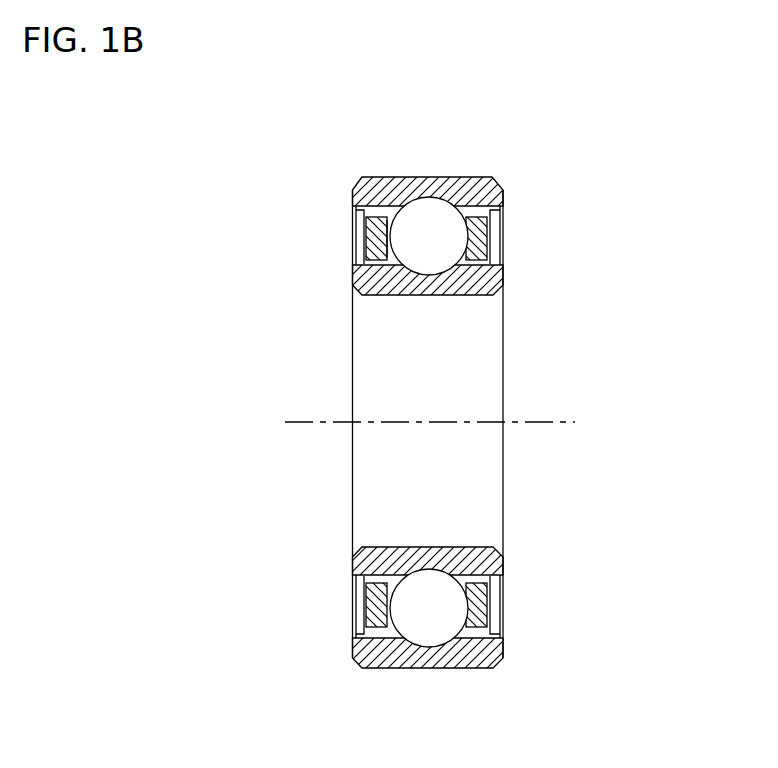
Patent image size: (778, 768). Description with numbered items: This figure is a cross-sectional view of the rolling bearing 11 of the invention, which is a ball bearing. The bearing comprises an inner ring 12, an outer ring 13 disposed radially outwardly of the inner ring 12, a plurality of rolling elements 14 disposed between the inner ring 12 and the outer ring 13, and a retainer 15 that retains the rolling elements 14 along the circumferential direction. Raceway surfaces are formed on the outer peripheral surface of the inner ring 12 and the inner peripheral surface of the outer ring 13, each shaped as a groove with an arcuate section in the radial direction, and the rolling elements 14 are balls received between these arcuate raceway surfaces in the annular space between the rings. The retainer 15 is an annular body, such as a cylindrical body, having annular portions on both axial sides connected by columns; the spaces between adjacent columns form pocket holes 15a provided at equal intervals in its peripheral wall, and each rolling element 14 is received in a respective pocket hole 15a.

The rolling bearing 11 is at (510, 371).
The inner ring 12 is at (378, 277).
The outer ring 13 is at (398, 188).
The rolling elements 14 is at (438, 220).
The retainer 15 is at (478, 247).
The pocket holes 15a is at (396, 240).